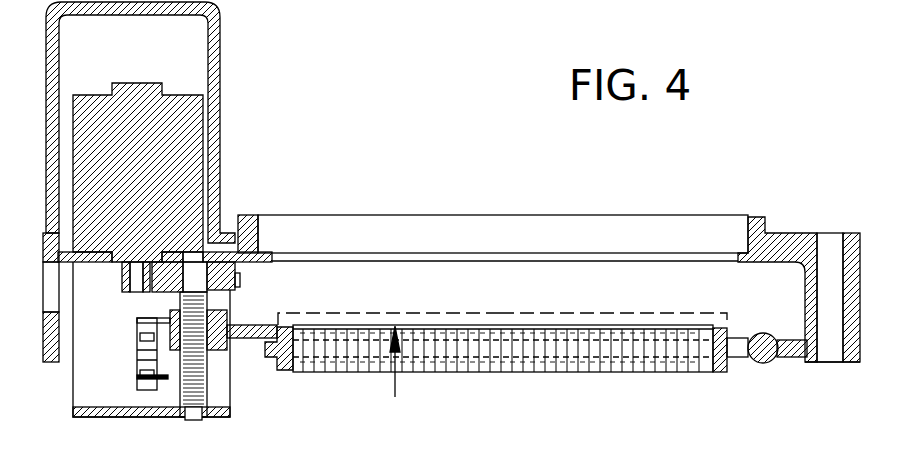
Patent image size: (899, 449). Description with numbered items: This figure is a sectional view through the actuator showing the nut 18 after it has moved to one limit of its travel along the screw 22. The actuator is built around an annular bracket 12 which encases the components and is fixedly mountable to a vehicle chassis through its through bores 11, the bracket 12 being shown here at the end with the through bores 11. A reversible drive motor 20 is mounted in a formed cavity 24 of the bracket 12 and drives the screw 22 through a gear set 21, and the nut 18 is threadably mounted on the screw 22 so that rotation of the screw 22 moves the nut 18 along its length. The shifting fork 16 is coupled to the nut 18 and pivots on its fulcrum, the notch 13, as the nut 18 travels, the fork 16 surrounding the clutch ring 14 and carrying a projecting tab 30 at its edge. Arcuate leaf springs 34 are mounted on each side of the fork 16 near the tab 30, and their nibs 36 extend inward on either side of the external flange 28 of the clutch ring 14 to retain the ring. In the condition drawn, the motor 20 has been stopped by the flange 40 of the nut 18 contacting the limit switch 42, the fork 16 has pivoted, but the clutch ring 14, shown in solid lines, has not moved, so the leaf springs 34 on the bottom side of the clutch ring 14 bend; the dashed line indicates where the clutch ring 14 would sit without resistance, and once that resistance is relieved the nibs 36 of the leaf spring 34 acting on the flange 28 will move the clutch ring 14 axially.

The through bores 11 is at (840, 265).
The bracket 12 is at (775, 233).
The notch 13 is at (818, 362).
The clutch ring 14 is at (285, 372).
The shifting fork 16 is at (243, 340).
The nut 18 is at (180, 343).
The drive motor 20 is at (172, 108).
The gear set 21 is at (240, 278).
The screw 22 is at (183, 395).
The cavity 24 is at (220, 72).
The flange 28 is at (270, 333).
The tab 30 is at (797, 338).
The leaf springs 34 is at (638, 325).
The nibs 36 is at (478, 325).
The flange 40 is at (170, 322).
The limit switch 42 is at (140, 347).